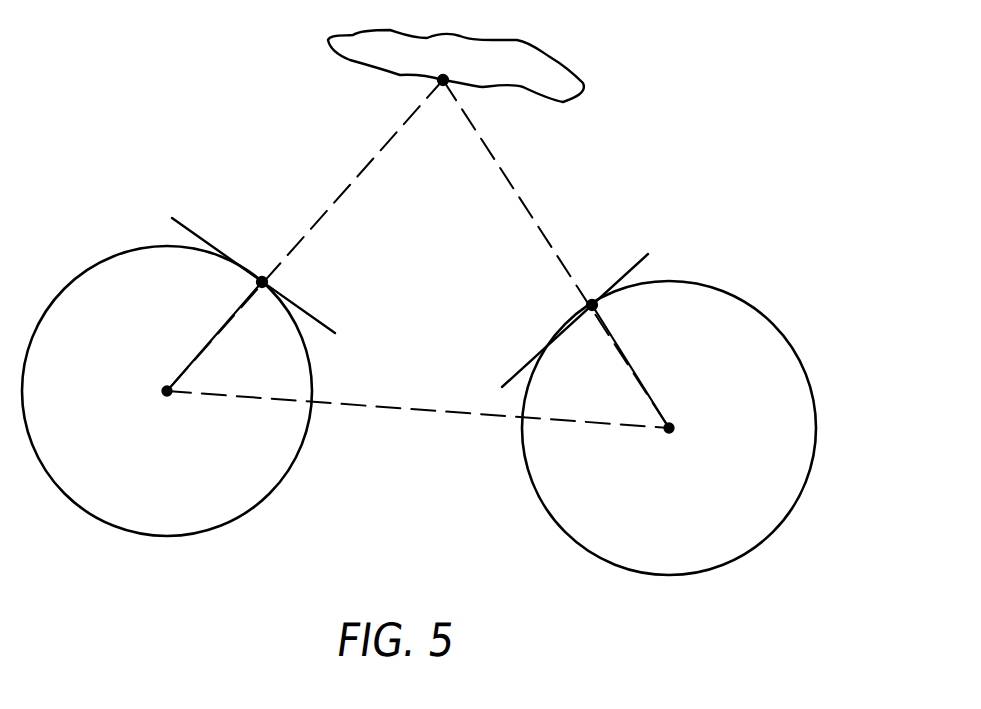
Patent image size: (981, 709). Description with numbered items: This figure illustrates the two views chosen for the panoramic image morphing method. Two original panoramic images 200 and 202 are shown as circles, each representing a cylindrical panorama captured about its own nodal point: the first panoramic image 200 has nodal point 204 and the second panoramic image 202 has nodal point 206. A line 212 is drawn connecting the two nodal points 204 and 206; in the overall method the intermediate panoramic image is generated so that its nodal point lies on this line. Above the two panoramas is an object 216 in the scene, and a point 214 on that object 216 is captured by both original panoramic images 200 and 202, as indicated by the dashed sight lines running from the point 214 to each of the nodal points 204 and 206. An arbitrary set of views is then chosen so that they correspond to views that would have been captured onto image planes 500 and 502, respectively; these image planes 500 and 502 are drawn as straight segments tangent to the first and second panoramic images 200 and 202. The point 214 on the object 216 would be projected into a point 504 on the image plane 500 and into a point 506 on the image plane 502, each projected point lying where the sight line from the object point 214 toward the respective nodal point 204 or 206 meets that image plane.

The original panoramic image 200 is at (222, 525).
The original panoramic image 202 is at (783, 520).
The nodal point 204 is at (163, 391).
The nodal point 206 is at (672, 432).
The line connecting the nodal points 212 is at (408, 409).
The point on the object 214 is at (442, 87).
The object 216 is at (543, 63).
The image plane 500 is at (193, 233).
The image plane 502 is at (620, 273).
The projected point 504 is at (267, 280).
The projected point 506 is at (590, 305).